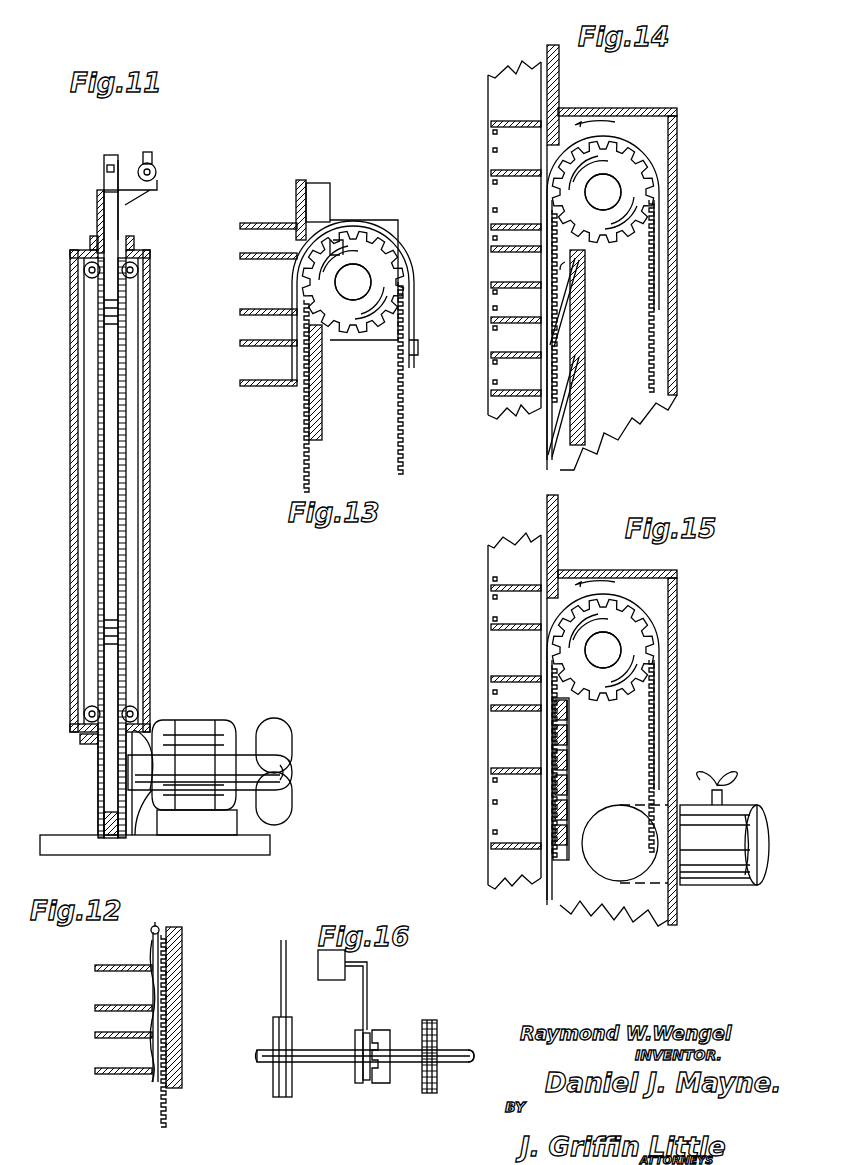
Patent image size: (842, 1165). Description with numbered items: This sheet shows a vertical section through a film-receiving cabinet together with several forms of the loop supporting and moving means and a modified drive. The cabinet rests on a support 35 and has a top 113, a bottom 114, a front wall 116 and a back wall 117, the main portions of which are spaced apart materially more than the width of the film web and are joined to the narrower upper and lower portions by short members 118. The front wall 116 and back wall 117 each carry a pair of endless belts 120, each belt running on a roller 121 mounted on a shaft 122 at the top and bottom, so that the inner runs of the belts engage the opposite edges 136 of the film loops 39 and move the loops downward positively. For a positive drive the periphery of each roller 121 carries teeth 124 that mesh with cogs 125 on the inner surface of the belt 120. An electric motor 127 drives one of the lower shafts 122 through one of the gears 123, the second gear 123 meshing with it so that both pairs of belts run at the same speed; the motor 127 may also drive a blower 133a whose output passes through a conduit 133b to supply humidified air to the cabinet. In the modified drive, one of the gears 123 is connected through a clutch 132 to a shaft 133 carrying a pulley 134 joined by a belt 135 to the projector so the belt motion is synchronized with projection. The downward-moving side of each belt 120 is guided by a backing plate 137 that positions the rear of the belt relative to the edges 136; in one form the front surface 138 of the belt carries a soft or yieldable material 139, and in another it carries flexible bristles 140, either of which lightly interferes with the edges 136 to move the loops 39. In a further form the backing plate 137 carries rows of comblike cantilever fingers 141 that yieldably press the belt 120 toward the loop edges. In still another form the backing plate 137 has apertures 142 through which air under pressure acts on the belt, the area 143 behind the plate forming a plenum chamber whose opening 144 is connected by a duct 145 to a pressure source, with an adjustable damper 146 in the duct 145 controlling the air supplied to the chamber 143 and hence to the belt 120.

In FIG. 11, the support 35 is at (270, 845).
In FIG. 14, the loops 39 is at (498, 228).
In FIG. 15, the loops 39 is at (490, 680).
In FIG. 11, the top 113 is at (97, 200).
In FIG. 11, the bottom 114 is at (98, 832).
In FIG. 11, the front wall 116 is at (70, 440).
In FIG. 11, the back wall 117 is at (150, 465).
In FIG. 11, the short members 118 is at (134, 245).
In FIG. 11, the endless belts 120 is at (70, 385).
In FIG. 13, the endless belts 120 is at (300, 180).
In FIG. 14, the endless belts 120 is at (547, 445).
In FIG. 15, the endless belts 120 is at (547, 895).
In FIG. 13, the roller 121 is at (375, 258).
In FIG. 14, the roller 121 is at (628, 178).
In FIG. 15, the roller 121 is at (632, 636).
In FIG. 13, the shaft 122 is at (355, 268).
In FIG. 14, the shaft 122 is at (615, 195).
In FIG. 15, the shaft 122 is at (615, 655).
In FIG. 16, the shaft 122 is at (472, 1062).
In FIG. 16, the gears 123 is at (437, 1030).
In FIG. 13, the teeth 124 is at (362, 222).
In FIG. 14, the teeth 124 is at (628, 175).
In FIG. 15, the teeth 124 is at (628, 635).
In FIG. 13, the cogs 125 is at (414, 330).
In FIG. 14, the cogs 125 is at (660, 290).
In FIG. 15, the cogs 125 is at (665, 700).
In FIG. 11, the electric motor 127 is at (200, 720).
In FIG. 16, the clutch 132 is at (385, 1030).
In FIG. 16, the shaft 133 is at (325, 1063).
In FIG. 11, the blower 133a is at (292, 790).
In FIG. 11, the conduit 133b is at (262, 755).
In FIG. 11, the pulley 134 is at (230, 765).
In FIG. 16, the pulley 134 is at (273, 1085).
In FIG. 16, the belt 135 is at (281, 980).
In FIG. 13, the edges 136 is at (296, 256).
In FIG. 14, the edges 136 is at (541, 228).
In FIG. 15, the edges 136 is at (541, 768).
In FIG. 12, the edges 136 is at (150, 966).
In FIG. 13, the backing plate 137 is at (322, 420).
In FIG. 14, the backing plate 137 is at (585, 372).
In FIG. 15, the backing plate 137 is at (567, 714).
In FIG. 12, the backing plate 137 is at (182, 1060).
In FIG. 12, the front surface 138 is at (153, 1085).
In FIG. 12, the soft or yieldable material 139 is at (153, 928).
In FIG. 13, the flexible bristles 140 is at (418, 348).
In FIG. 14, the comblike cantilever fingers 141 is at (568, 320).
In FIG. 15, the apertures 142 is at (570, 770).
In FIG. 15, the area 143 is at (634, 824).
In FIG. 15, the opening 144 is at (620, 843).
In FIG. 15, the duct 145 is at (718, 855).
In FIG. 15, the adjustable damper 146 is at (745, 800).